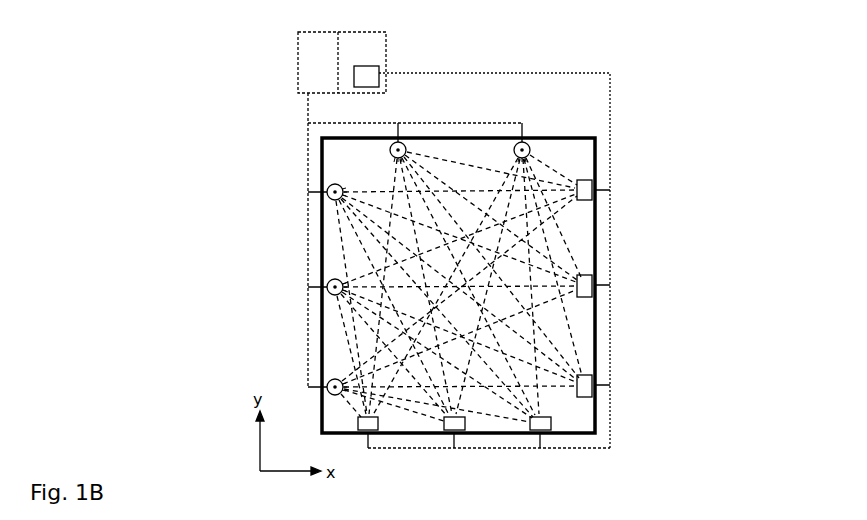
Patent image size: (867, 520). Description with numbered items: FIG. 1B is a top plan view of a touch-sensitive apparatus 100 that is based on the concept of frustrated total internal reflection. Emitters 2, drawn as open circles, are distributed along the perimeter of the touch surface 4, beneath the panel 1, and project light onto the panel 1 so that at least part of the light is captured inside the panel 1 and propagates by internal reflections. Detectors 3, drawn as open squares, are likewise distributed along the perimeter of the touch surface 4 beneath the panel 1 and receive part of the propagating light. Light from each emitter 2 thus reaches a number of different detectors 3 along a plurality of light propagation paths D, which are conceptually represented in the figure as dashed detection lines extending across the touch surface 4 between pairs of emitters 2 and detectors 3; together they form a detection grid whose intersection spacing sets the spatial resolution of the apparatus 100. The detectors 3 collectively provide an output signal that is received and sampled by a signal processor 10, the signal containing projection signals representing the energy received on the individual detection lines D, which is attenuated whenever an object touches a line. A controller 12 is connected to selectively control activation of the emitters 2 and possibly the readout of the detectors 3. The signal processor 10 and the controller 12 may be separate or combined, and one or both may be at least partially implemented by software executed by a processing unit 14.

The touch-sensitive apparatus 100 is at (662, 80).
The signal processor 10 is at (357, 42).
The controller 12 is at (298, 46).
The processing unit 14 is at (370, 66).
The panel 1 is at (548, 138).
The emitters 2 is at (398, 142).
The detectors 3 is at (594, 380).
The touch surface 4 is at (396, 210).
The light propagation paths D is at (560, 178).